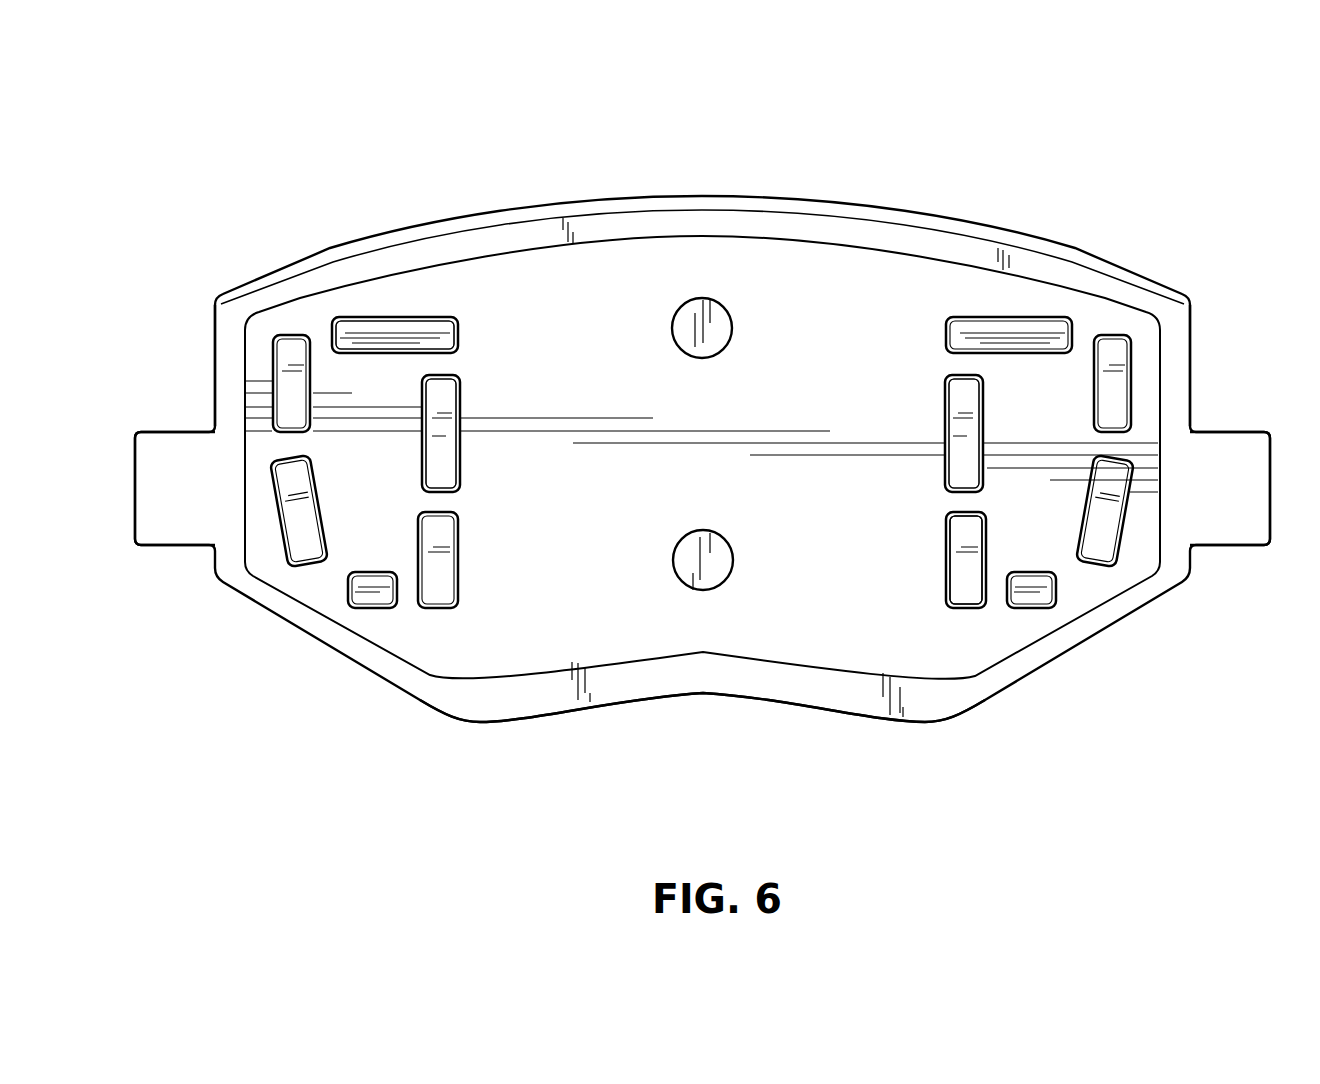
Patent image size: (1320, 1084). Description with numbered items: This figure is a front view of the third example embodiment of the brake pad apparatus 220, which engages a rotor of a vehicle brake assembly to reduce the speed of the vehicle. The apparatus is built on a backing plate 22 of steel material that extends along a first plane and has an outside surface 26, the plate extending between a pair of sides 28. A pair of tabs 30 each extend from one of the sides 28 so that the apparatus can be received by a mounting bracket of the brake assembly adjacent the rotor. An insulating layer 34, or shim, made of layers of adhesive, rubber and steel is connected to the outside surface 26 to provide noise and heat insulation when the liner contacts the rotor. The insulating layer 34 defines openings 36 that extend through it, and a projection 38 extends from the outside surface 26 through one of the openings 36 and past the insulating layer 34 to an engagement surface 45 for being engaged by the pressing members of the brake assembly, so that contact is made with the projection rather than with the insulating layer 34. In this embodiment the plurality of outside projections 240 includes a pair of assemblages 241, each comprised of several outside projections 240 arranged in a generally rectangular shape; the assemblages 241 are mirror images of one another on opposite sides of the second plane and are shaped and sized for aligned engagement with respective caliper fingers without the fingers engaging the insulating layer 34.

The backing plate 22 is at (518, 216).
The outside surface 26 is at (497, 242).
The sides 28 is at (225, 371).
The tabs 30 is at (143, 470).
The insulating layer 34 is at (402, 633).
The opening 36 is at (455, 465).
The projection 38 is at (717, 326).
The engagement surface 45 is at (445, 590).
The brake pad apparatus 220 is at (1003, 188).
The outside projections 240 is at (440, 343).
The assemblages 241 is at (463, 412).